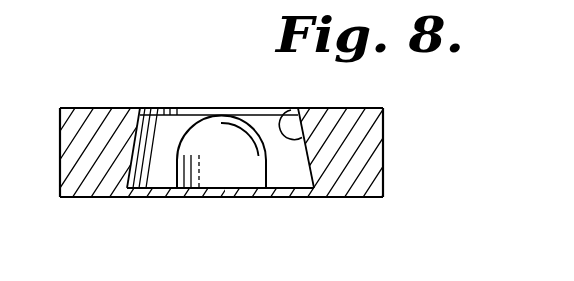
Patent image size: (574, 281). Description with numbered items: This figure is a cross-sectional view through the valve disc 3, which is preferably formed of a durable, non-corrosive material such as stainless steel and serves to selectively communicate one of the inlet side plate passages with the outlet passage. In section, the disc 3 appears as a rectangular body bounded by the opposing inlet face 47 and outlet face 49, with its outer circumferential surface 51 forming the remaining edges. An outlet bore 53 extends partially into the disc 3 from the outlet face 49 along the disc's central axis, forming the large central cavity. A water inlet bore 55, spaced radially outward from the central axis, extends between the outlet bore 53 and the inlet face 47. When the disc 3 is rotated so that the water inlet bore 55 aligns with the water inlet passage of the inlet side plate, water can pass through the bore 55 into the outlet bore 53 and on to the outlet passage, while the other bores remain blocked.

The disc 3 is at (408, 106).
The inlet face 47 is at (86, 197).
The outlet face 49 is at (98, 108).
The outer circumferential surface 51 is at (60, 156).
The outlet bore 53 is at (291, 110).
The water inlet bore 55 is at (267, 160).